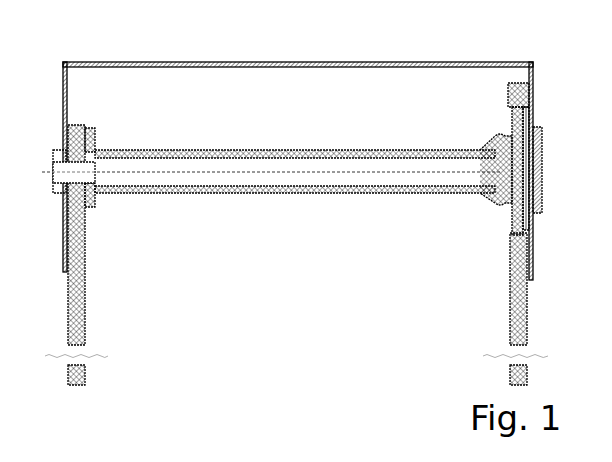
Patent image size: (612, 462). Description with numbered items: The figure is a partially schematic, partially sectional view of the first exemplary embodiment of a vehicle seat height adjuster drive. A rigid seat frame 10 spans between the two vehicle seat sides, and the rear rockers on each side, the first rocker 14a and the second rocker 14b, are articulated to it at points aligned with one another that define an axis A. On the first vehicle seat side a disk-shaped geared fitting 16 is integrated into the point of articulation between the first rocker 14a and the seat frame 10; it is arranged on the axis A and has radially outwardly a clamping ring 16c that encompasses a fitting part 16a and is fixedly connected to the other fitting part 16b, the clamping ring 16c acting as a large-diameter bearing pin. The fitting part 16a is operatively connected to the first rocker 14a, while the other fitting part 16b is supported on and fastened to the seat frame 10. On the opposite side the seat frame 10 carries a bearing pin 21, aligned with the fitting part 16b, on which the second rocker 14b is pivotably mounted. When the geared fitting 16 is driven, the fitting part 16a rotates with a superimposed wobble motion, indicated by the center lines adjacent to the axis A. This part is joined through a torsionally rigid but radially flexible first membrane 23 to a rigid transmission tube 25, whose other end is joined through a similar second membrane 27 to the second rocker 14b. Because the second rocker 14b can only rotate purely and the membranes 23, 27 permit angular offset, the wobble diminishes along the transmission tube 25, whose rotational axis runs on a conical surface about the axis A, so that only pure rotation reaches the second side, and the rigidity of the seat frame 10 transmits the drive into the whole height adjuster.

The seat frame 10 is at (288, 63).
The first rocker 14a is at (510, 333).
The second rocker 14b is at (82, 312).
The geared fitting 16 is at (538, 216).
The fitting part 16a is at (512, 192).
The other fitting part 16b is at (528, 137).
The clamping ring 16c is at (521, 107).
The bearing pin 21 is at (57, 157).
The first membrane 23 is at (495, 197).
The transmission tube 25 is at (353, 193).
The second membrane 27 is at (90, 210).
The axis A is at (427, 173).